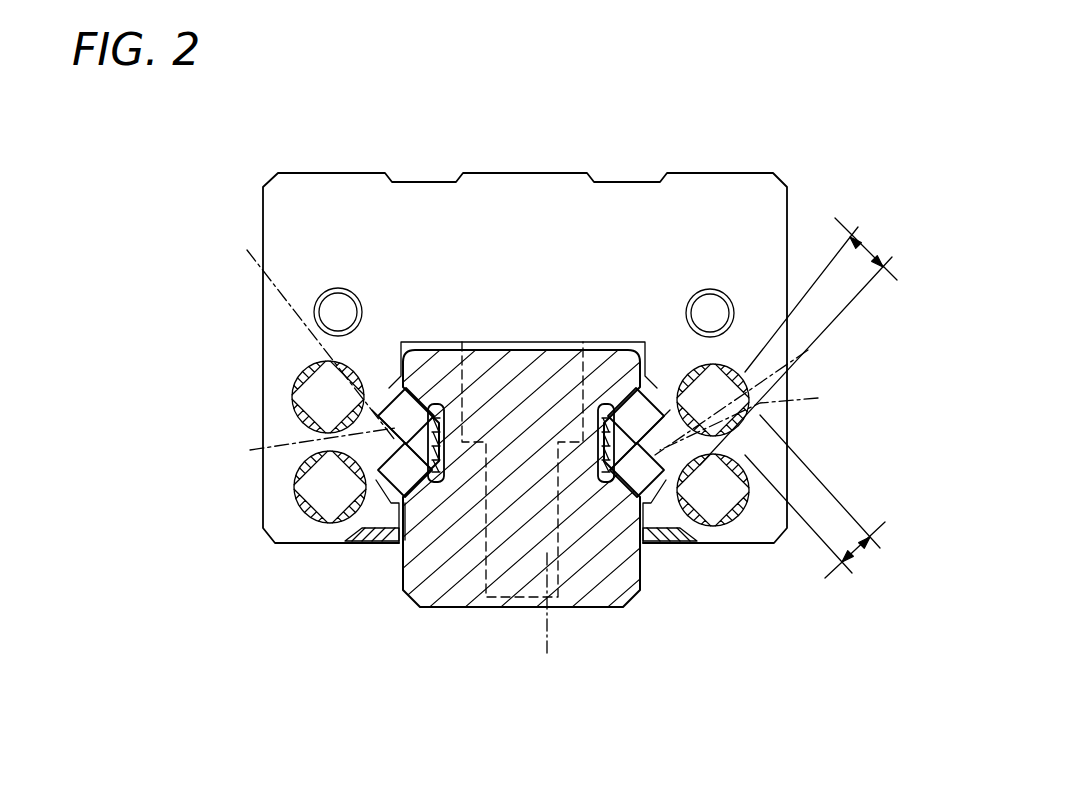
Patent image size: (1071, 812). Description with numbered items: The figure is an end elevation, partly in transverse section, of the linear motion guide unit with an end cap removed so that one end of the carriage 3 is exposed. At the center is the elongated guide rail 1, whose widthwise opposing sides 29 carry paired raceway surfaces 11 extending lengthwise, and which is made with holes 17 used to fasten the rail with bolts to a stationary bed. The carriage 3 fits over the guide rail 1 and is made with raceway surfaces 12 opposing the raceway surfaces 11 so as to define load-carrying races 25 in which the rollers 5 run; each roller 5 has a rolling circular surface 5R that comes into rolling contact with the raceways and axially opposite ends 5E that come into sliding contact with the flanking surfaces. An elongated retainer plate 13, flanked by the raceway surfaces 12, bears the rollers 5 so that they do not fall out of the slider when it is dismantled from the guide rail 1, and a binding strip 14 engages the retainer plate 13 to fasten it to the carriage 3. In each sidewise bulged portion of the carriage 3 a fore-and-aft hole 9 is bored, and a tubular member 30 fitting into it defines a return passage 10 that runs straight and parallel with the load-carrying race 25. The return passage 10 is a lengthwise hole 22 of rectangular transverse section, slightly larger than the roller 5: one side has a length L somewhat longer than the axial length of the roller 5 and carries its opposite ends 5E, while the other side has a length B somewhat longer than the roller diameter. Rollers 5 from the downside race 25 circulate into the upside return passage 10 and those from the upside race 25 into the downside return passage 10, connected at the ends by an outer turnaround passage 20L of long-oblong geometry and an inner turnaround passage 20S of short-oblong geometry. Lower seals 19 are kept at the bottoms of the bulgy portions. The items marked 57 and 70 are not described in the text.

The guide rail 1 is at (520, 570).
The carriage 3 is at (752, 213).
The roller 5 is at (405, 390).
The axially opposite ends of the roller 5E is at (403, 395).
The rolling circular surface of the roller 5R is at (440, 376).
The fore-and-aft hole 9 is at (294, 394).
The return passage 10 is at (325, 362).
The raceway surface 11 is at (418, 345).
The raceway surface 12 is at (398, 415).
The retainer plate 13 is at (470, 380).
The binding strip 14 is at (493, 366).
The hole 17 is at (553, 617).
The lower seal 19 is at (380, 545).
The inner turnaround passage 20S is at (526, 339).
The outer turnaround passage 20L is at (531, 423).
The hole 22 is at (300, 374).
The load-carrying race 25 is at (678, 205).
The widthwise opposing sides 29 is at (402, 568).
The tubular member 30 is at (293, 410).
The partition 57 is at (290, 434).
The mounting hole 70 is at (338, 300).
The length L is at (798, 341).
The length B is at (815, 496).